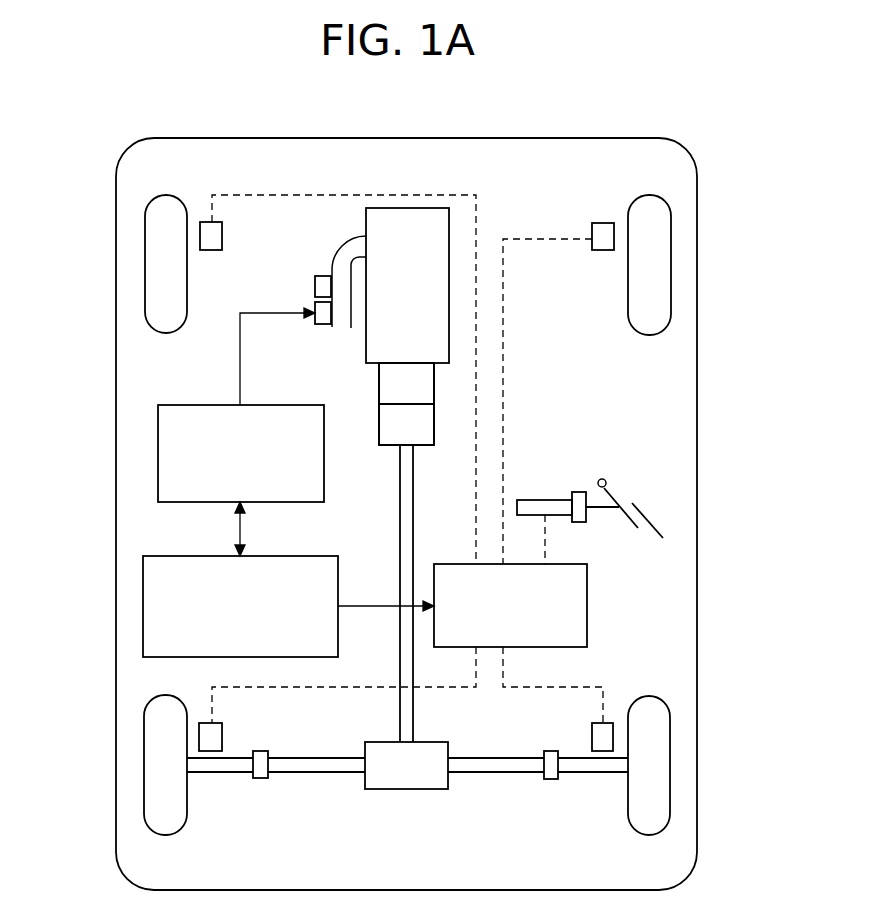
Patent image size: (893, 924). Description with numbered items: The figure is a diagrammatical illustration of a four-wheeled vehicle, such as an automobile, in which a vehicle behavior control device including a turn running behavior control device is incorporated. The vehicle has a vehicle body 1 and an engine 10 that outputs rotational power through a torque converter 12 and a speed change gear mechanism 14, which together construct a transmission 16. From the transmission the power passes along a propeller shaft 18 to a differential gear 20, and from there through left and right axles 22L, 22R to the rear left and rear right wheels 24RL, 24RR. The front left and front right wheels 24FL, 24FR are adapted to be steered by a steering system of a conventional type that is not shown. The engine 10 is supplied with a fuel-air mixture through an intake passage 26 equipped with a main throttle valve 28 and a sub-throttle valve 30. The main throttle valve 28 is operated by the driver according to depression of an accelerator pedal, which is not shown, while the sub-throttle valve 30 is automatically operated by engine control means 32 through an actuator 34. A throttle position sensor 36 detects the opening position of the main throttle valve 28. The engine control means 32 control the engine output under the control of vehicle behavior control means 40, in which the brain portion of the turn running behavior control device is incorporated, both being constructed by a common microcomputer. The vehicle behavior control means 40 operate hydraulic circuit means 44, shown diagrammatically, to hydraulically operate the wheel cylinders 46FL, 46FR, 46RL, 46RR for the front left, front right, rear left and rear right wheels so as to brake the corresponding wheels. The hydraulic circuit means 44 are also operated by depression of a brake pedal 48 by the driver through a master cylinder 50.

The vehicle body 1 is at (697, 388).
The engine 10 is at (407, 285).
The torque converter 12 is at (406, 383).
The speed change gear mechanism 14 is at (406, 424).
The transmission 16 is at (376, 399).
The propeller shaft 18 is at (400, 500).
The differential gear 20 is at (405, 790).
The left axle 22L is at (313, 773).
The right axle 22R is at (521, 773).
The front left wheel 24FL is at (145, 266).
The front right wheel 24FR is at (671, 265).
The rear left wheel 24RL is at (144, 758).
The rear right wheel 24RR is at (670, 753).
The intake passage 26 is at (343, 258).
The main throttle valve 28 is at (344, 290).
The sub-throttle valve 30 is at (345, 320).
The engine control means 32 is at (241, 453).
The actuator 34 is at (323, 324).
The throttle position sensor 36 is at (315, 279).
The vehicle behavior control means 40 is at (240, 607).
The hydraulic circuit means 44 is at (510, 605).
The wheel cylinder 46FL is at (211, 250).
The wheel cylinder 46FR is at (604, 250).
The wheel cylinder 46RL is at (213, 741).
The wheel cylinder 46RR is at (592, 734).
The brake pedal 48 is at (645, 515).
The master cylinder 50 is at (545, 500).